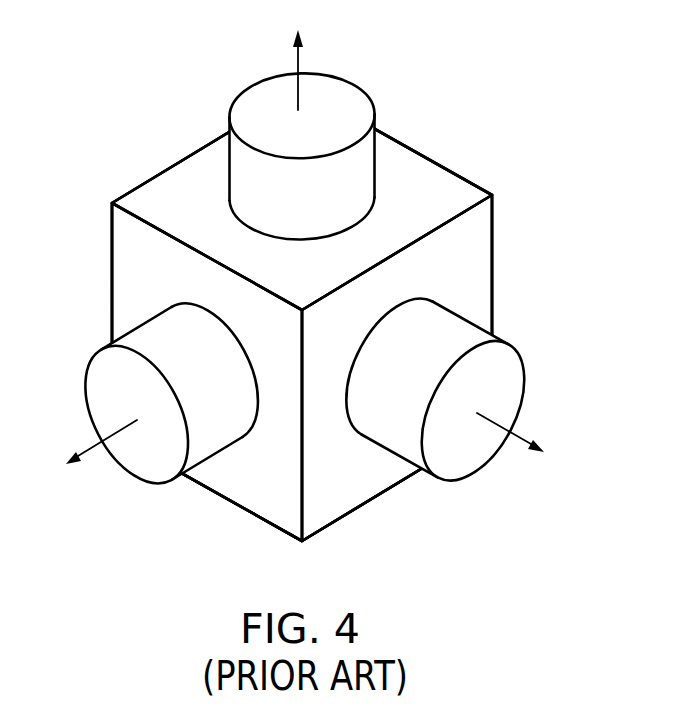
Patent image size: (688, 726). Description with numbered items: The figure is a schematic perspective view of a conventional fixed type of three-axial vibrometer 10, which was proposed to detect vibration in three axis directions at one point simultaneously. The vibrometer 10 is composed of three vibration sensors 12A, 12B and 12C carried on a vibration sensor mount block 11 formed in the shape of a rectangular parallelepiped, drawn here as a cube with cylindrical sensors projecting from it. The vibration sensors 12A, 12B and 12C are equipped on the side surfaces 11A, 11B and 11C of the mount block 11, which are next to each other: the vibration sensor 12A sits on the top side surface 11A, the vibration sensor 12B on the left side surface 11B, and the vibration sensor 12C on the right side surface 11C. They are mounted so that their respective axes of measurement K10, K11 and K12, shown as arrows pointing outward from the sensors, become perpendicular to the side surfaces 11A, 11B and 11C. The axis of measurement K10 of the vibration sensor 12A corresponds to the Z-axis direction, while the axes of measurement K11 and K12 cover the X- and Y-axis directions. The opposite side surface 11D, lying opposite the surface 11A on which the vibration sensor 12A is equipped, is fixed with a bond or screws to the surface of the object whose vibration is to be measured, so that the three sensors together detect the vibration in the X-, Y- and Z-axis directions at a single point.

The three-axial vibrometer 10 is at (599, 136).
The vibration sensor mount block 11 is at (493, 225).
The side surface 11A is at (158, 193).
The side surface 11B is at (127, 258).
The side surface 11C is at (367, 482).
The opposite side surface 11D is at (276, 539).
The vibration sensor 12A is at (358, 113).
The vibration sensor 12B is at (102, 368).
The vibration sensor 12C is at (506, 375).
The axis of measurement K10 is at (298, 56).
The axis of measurement K11 is at (97, 440).
The axis of measurement K12 is at (512, 435).